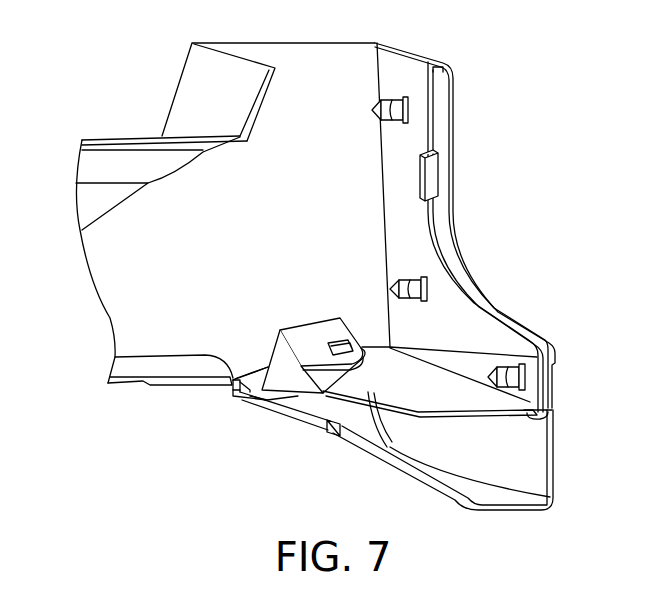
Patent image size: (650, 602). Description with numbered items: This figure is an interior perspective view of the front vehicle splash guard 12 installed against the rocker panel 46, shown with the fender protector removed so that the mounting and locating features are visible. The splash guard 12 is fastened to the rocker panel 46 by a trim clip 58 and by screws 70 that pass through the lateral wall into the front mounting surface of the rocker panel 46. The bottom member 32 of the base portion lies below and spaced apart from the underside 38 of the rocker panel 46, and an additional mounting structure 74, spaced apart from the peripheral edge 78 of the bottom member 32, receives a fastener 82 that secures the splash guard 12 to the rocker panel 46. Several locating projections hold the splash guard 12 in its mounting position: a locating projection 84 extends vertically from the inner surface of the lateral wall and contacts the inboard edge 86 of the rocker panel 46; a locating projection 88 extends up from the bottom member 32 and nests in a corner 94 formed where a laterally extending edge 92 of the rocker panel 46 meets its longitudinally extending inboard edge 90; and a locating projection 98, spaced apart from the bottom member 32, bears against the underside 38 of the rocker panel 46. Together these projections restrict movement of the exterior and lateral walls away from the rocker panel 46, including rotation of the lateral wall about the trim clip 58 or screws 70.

The front vehicle splash guard 12 is at (506, 299).
The bottom member 32 is at (373, 457).
The underside 38 is at (460, 414).
The rocker panel 46 is at (130, 250).
The trim clip 58 is at (393, 121).
The screw 70 is at (406, 280).
The additional mounting structure 74 is at (233, 396).
The peripheral edge 78 is at (334, 428).
The fastener 82 is at (257, 400).
The locating projection 84 is at (432, 179).
The inboard edge 86 is at (430, 113).
The locating projection 88 is at (236, 382).
The inboard edge 90 is at (162, 384).
The laterally extending edge 92 is at (250, 390).
The corner 94 is at (237, 385).
The locating projection 98 is at (533, 415).